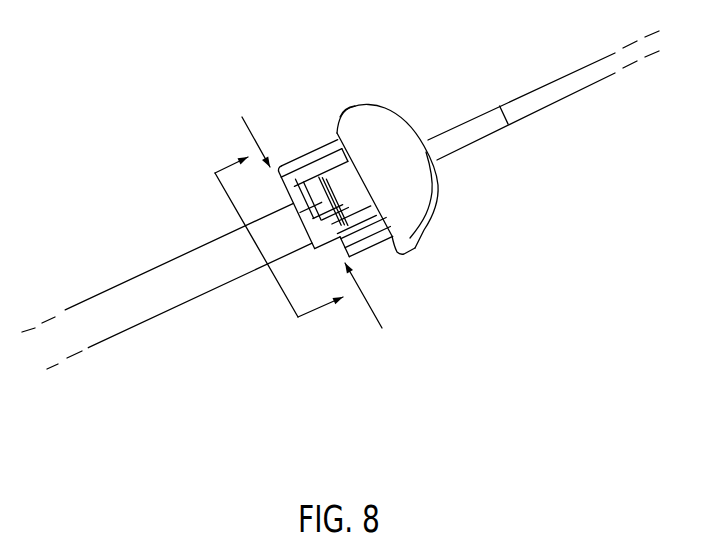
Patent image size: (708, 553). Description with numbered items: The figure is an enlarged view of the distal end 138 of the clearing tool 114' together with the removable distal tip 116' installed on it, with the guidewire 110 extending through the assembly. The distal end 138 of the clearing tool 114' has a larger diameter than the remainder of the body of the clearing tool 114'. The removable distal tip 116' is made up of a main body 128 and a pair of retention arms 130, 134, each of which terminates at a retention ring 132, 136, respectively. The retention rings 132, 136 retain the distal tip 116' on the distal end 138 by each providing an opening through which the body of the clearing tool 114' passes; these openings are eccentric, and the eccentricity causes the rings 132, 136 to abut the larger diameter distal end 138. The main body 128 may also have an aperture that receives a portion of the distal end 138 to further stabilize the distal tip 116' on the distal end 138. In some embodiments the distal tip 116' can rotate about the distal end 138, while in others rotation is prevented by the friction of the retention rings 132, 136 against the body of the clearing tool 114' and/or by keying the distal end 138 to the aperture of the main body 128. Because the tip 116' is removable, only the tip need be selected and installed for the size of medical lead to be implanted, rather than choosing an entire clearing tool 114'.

The guidewire 110 is at (477, 132).
The clearing tool 114' is at (167, 293).
The removable distal tip 116' is at (360, 71).
The main body 128 is at (381, 127).
The retention arm 130 is at (290, 164).
The retention ring 132 is at (300, 212).
The retention arm 134 is at (372, 245).
The retention ring 136 is at (332, 222).
The distal end 138 is at (353, 198).